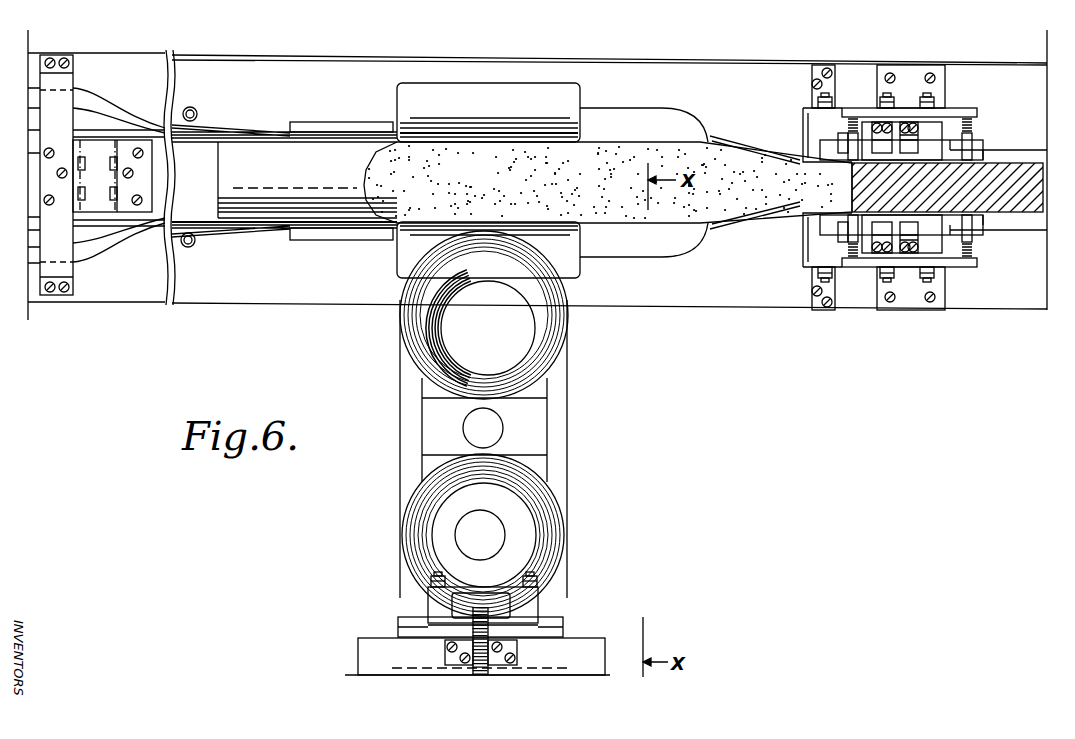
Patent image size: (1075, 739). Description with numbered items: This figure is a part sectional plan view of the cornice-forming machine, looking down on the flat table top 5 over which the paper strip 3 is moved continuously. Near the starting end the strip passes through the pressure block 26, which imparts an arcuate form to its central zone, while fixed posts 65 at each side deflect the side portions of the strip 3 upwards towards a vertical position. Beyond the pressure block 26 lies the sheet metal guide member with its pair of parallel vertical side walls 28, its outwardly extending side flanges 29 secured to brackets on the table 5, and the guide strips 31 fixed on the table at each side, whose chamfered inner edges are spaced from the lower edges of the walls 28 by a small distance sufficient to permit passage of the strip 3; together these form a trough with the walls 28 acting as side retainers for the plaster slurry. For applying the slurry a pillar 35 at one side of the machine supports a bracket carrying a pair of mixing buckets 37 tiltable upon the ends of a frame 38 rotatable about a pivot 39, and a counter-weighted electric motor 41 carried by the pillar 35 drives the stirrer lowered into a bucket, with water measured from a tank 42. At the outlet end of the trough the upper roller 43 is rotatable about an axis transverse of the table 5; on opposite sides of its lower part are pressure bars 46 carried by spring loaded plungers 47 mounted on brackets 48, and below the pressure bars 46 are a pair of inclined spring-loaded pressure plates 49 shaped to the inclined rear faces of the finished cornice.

The paper strip 3 is at (241, 230).
The flat table top 5 is at (115, 287).
The pressure block 26 is at (158, 148).
The side walls of the guide member 28 is at (284, 218).
The side flanges 29 is at (650, 270).
The guide strips 31 is at (348, 237).
The pillar 35 is at (368, 652).
The mixing buckets 37 is at (388, 500).
The frame 38 is at (410, 395).
The pivot 39 is at (490, 432).
The electric motor 41 is at (437, 545).
The tank 42 is at (488, 180).
The upper roller 43 is at (1017, 205).
The pressure bars 46 is at (990, 262).
The spring loaded plungers 47 is at (978, 270).
The brackets 48 is at (853, 275).
The inclined spring-loaded pressure plates 49 is at (1033, 252).
The fixed posts 65 is at (203, 254).